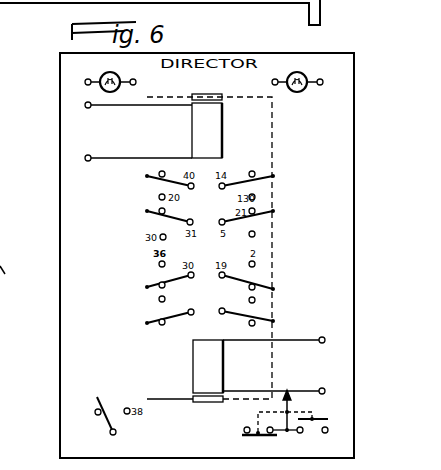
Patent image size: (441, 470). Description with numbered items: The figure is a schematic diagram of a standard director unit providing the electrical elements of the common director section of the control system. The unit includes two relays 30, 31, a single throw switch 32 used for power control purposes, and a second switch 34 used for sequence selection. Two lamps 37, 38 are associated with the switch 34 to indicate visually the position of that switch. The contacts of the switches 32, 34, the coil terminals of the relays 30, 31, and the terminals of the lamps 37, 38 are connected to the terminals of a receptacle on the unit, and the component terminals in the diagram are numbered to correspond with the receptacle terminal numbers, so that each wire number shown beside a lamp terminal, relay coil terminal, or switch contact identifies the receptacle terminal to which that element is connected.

The lamp 37 is at (100, 70).
The lamp 38 is at (307, 66).
The relay 30 is at (204, 132).
The relay 31 is at (216, 367).
The single throw switch 32 is at (98, 420).
The second switch 34 is at (320, 413).